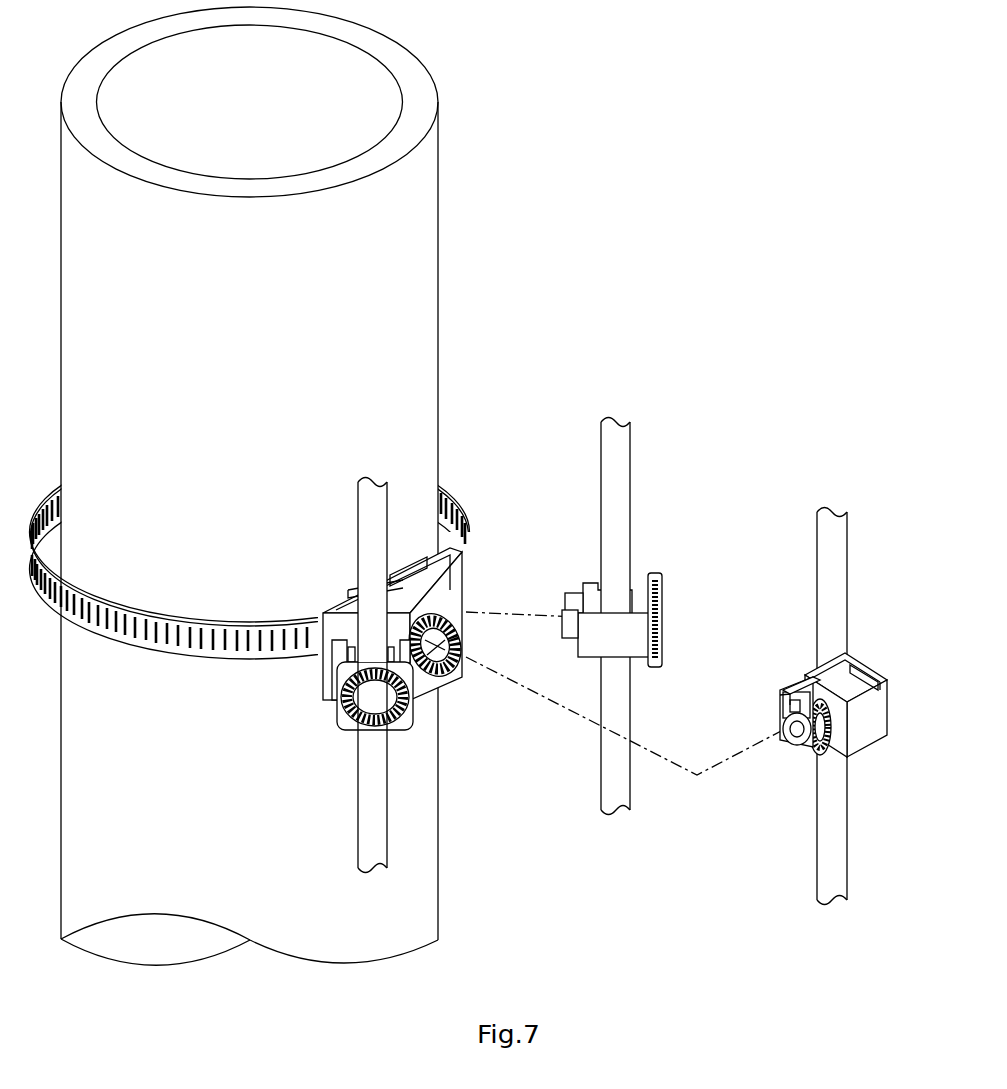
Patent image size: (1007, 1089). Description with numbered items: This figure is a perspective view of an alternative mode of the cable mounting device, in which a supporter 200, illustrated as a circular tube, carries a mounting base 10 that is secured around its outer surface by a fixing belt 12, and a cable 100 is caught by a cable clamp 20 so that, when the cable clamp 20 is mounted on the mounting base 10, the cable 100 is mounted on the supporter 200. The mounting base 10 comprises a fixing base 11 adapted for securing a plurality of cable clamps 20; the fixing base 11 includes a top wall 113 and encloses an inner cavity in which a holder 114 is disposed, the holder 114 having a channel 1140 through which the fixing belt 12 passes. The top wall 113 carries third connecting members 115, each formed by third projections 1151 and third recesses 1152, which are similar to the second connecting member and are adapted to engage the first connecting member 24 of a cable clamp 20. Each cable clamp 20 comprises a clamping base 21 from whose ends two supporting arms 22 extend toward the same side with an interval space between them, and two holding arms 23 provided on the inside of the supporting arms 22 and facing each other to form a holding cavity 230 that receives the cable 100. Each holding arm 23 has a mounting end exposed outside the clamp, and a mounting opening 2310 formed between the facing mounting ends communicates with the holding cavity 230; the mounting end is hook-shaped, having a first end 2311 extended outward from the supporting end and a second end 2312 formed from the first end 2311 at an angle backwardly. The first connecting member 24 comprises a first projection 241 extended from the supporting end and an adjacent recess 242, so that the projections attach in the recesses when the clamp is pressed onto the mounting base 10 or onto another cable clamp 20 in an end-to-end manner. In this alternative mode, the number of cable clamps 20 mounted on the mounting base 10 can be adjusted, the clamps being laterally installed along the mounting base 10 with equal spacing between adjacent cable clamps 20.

The supporter 200 is at (397, 387).
The cable 100 is at (612, 498).
The mounting base 10 is at (290, 618).
The fixing belt 12 is at (193, 657).
The fixing base 11 is at (384, 644).
The top wall 113 is at (315, 657).
The holder 114 is at (395, 602).
The channel 1140 is at (348, 577).
The third connecting member 115 is at (475, 700).
The third projection 1151 is at (437, 665).
The third recess 1152 is at (433, 672).
The cable clamp 20 is at (659, 554).
The clamping base 21 is at (870, 678).
The supporting arm 22 is at (852, 723).
The holding arm 23 is at (815, 719).
The first connecting member 24 is at (828, 748).
The holding cavity 230 is at (748, 669).
The mounting opening 2310 is at (780, 723).
The first end 2311 is at (805, 745).
The second end 2312 is at (810, 747).
The first projection 241 is at (778, 695).
The recess 242 is at (783, 687).